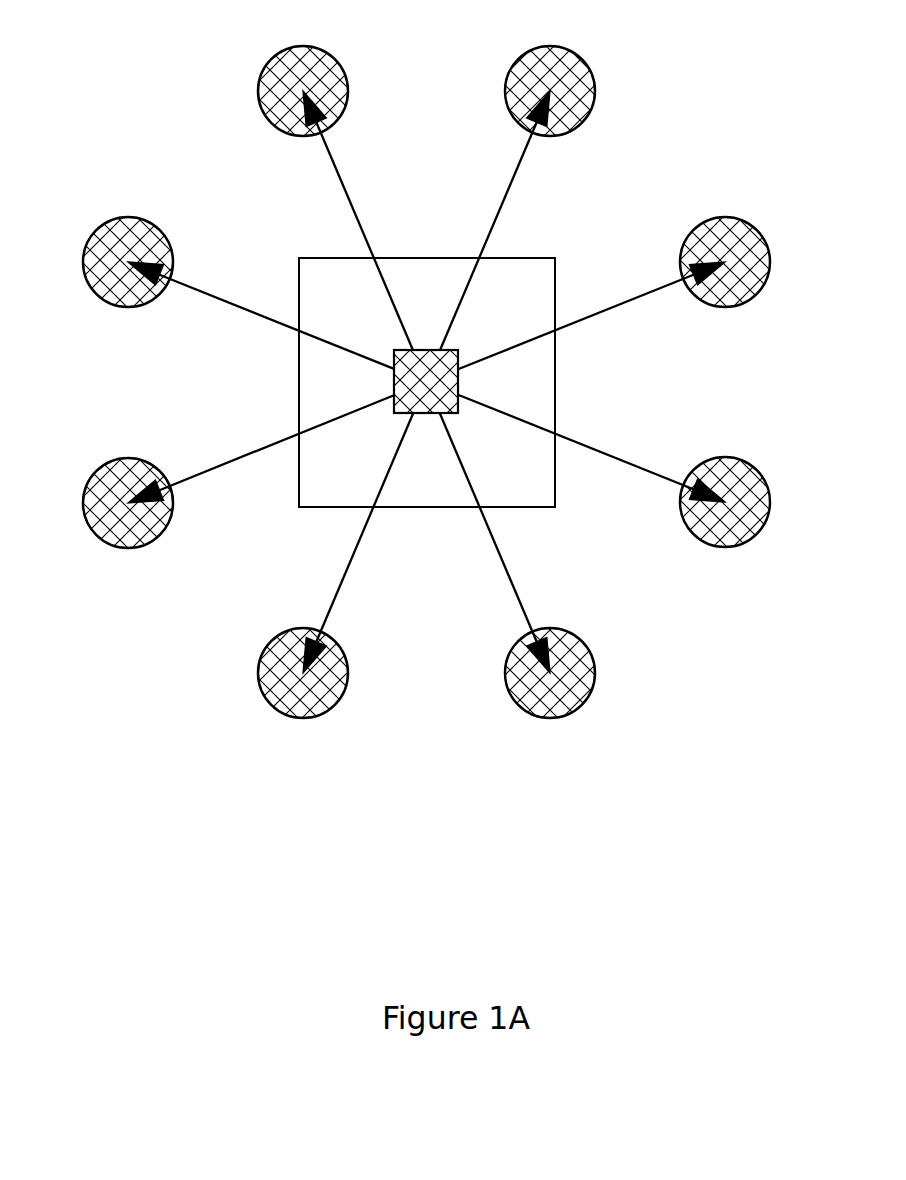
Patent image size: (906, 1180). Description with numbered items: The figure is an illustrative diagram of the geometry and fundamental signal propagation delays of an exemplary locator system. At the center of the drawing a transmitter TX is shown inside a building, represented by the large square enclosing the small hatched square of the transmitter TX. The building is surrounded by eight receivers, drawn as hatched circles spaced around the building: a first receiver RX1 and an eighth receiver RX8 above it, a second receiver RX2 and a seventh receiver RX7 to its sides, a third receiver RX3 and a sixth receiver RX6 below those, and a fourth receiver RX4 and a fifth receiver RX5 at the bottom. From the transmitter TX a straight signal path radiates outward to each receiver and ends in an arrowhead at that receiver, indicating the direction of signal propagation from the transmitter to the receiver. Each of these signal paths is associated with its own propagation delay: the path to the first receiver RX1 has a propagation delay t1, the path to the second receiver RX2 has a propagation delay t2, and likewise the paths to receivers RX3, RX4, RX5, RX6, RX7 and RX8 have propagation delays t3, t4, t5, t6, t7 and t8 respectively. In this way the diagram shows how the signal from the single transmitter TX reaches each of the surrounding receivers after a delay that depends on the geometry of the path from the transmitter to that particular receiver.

The transmitter TX is at (456, 414).
The receiver RX1 is at (577, 91).
The receiver RX2 is at (755, 262).
The receiver RX3 is at (751, 508).
The receiver RX4 is at (559, 694).
The receiver RX5 is at (295, 694).
The receiver RX6 is at (101, 504).
The receiver RX7 is at (100, 262).
The receiver RX8 is at (298, 68).
The propagation delay t1 is at (504, 220).
The propagation delay t2 is at (591, 315).
The propagation delay t3 is at (591, 458).
The propagation delay t4 is at (495, 543).
The propagation delay t5 is at (357, 543).
The propagation delay t6 is at (261, 449).
The propagation delay t7 is at (261, 303).
The propagation delay t8 is at (358, 220).